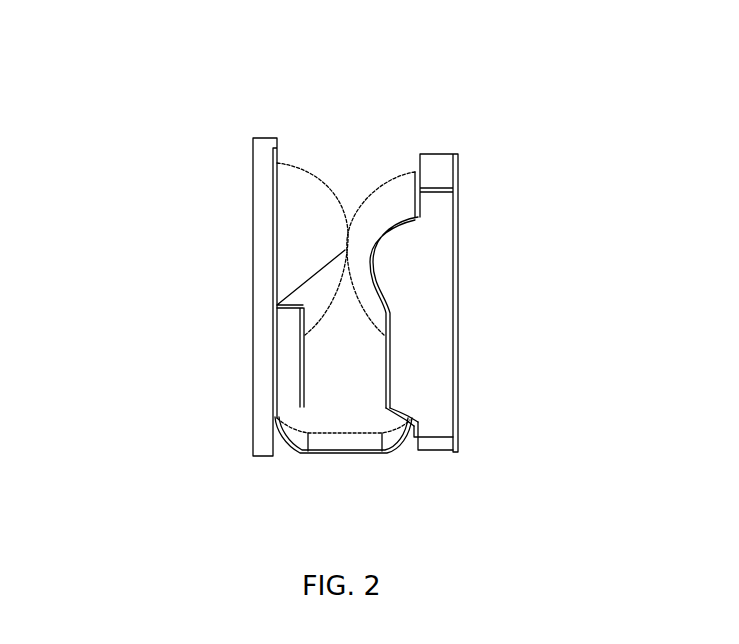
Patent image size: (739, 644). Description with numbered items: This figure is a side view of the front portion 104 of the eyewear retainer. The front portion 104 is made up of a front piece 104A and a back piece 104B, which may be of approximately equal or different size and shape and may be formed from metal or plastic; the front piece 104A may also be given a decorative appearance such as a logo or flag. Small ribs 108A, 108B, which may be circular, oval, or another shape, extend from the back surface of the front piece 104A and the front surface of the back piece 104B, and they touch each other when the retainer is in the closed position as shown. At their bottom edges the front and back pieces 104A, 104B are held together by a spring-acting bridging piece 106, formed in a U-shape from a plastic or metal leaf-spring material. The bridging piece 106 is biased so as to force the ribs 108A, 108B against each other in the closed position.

The front portion 104 is at (133, 387).
The front piece 104A is at (253, 208).
The back piece 104B is at (457, 358).
The spring-acting bridging piece 106 is at (383, 453).
The rib 108A is at (310, 170).
The rib 108B is at (390, 172).